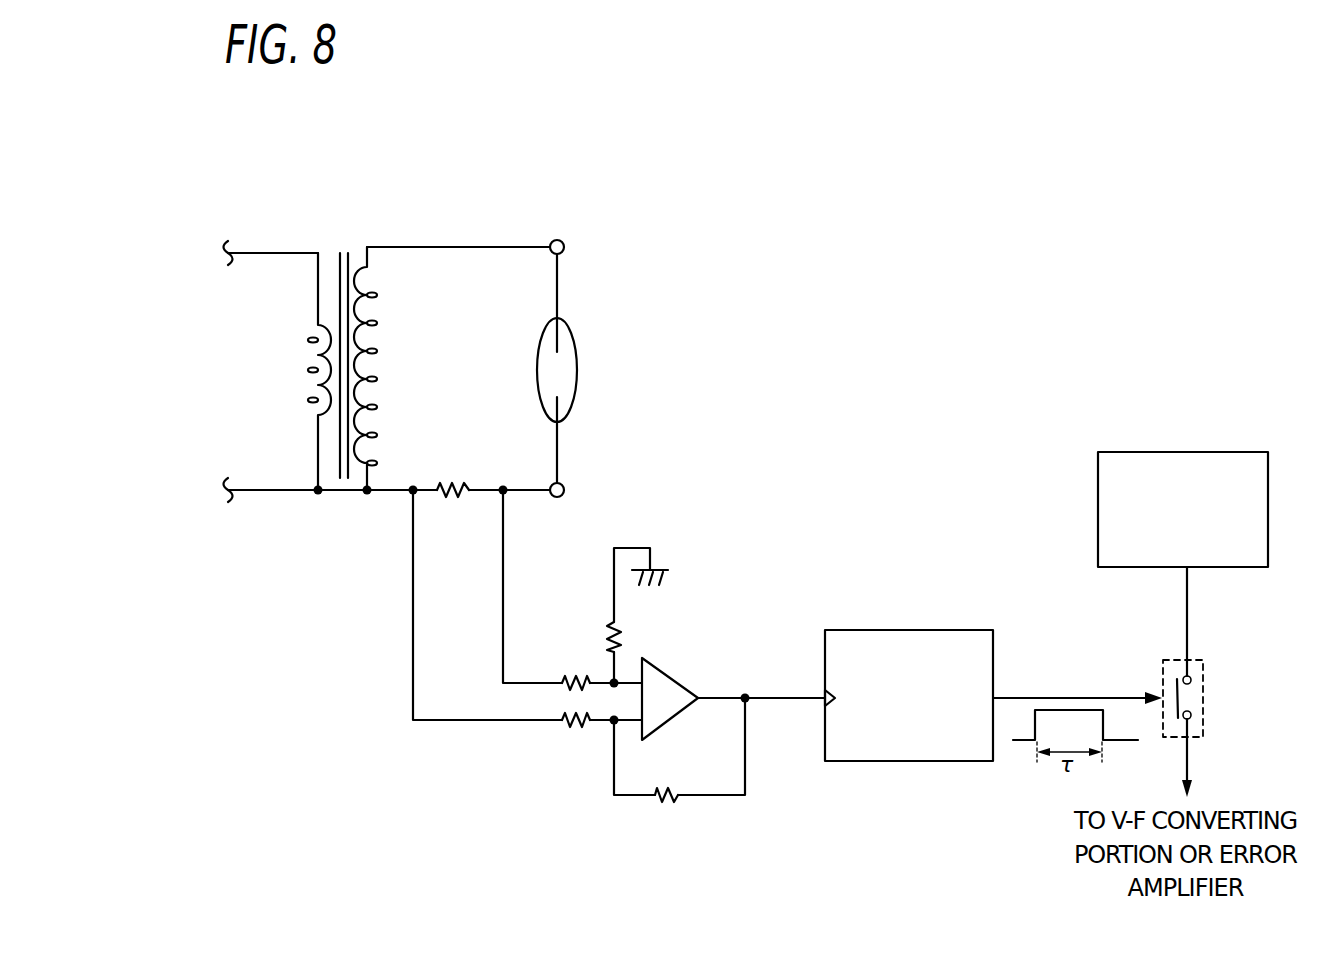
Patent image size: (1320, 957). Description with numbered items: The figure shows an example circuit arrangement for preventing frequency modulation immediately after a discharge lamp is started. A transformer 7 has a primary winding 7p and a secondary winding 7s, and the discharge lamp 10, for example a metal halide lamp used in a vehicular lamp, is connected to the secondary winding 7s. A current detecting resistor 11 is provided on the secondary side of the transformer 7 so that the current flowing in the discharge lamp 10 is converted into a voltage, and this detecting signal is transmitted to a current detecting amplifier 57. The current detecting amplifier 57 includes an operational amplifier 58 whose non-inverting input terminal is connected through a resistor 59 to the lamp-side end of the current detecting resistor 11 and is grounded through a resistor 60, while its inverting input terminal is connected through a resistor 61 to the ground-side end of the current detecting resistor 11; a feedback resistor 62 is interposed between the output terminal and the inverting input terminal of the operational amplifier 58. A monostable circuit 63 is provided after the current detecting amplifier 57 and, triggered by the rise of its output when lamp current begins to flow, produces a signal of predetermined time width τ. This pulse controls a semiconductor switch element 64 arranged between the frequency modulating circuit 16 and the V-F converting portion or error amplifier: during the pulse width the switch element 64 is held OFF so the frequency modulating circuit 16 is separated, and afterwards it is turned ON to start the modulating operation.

The transformer 7 is at (354, 308).
The primary winding 7p is at (326, 312).
The secondary winding 7s is at (358, 265).
The discharge lamp 10 is at (576, 336).
The current detecting resistor 11 is at (440, 497).
The frequency modulating circuit 16 is at (1098, 496).
The current detecting amplifier 57 is at (705, 697).
The operational amplifier 58 is at (673, 722).
The resistor 59 is at (570, 672).
The resistor 60 is at (623, 632).
The resistor 61 is at (570, 745).
The feedback resistor 62 is at (670, 805).
The monostable circuit 63 is at (905, 762).
The semiconductor switch element 64 is at (1205, 691).